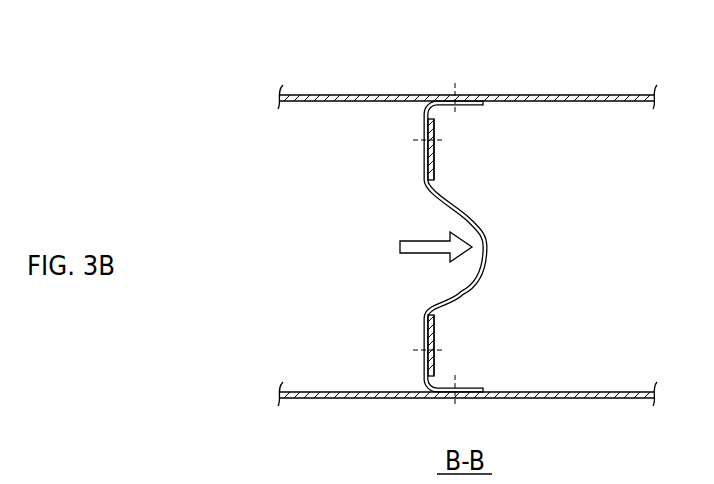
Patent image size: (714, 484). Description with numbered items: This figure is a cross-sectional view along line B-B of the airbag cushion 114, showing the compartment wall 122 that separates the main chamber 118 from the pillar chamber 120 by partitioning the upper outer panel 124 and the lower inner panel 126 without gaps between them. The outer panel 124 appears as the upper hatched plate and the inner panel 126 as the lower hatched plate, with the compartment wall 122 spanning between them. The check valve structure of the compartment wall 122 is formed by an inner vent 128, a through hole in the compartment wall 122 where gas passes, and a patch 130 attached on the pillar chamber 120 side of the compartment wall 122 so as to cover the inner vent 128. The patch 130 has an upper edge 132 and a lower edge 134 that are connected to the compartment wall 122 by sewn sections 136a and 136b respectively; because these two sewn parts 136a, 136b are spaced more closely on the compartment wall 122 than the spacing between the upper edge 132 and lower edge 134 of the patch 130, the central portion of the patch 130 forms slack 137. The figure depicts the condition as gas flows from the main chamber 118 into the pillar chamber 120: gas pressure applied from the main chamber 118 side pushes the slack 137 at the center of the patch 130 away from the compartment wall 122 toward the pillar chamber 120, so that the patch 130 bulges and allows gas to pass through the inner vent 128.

The airbag cushion 114 is at (287, 59).
The main chamber 118 is at (356, 93).
The pillar chamber 120 is at (550, 92).
The upper outer panel 124 is at (619, 93).
The lower inner panel 126 is at (609, 400).
The compartment wall 122 is at (423, 126).
The inner vent 128 is at (423, 182).
The patch 130 is at (480, 214).
The upper edge 132 is at (434, 128).
The lower edge 134 is at (436, 358).
The sewn section 136a is at (443, 140).
The sewn section 136b is at (441, 350).
The slack 137 is at (490, 246).